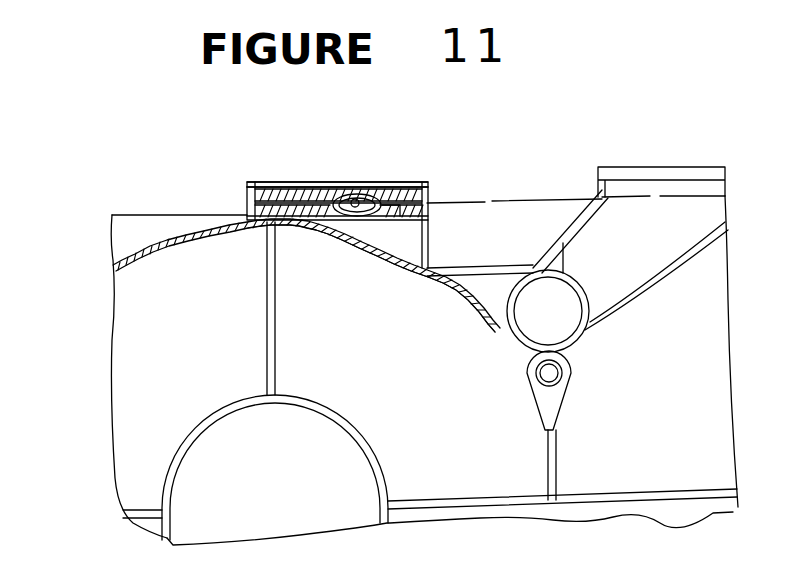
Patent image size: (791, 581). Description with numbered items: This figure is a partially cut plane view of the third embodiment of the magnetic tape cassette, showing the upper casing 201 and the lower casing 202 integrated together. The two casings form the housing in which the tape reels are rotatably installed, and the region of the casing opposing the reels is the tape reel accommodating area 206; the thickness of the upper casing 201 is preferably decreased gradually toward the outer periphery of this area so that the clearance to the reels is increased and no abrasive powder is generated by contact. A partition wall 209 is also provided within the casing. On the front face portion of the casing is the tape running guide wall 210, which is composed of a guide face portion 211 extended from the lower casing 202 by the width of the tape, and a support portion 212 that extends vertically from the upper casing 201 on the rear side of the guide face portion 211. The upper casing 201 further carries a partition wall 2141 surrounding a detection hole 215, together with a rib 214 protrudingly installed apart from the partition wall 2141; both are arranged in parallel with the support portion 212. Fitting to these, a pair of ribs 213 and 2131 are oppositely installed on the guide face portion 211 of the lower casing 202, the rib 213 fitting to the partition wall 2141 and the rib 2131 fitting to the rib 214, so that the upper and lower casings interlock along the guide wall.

The upper casing 201 is at (538, 200).
The lower casing 202 is at (157, 247).
The tape reel accommodating area 206 is at (167, 453).
The partition wall 209 is at (646, 278).
The tape running guide wall 210 is at (418, 180).
The guide face portion 211 is at (383, 182).
The support portion 212 is at (413, 205).
The rib 213 is at (280, 182).
The rib 214 is at (313, 188).
The partition wall 2141 is at (346, 194).
The rib 2131 is at (390, 218).
The detection hole 215 is at (343, 227).